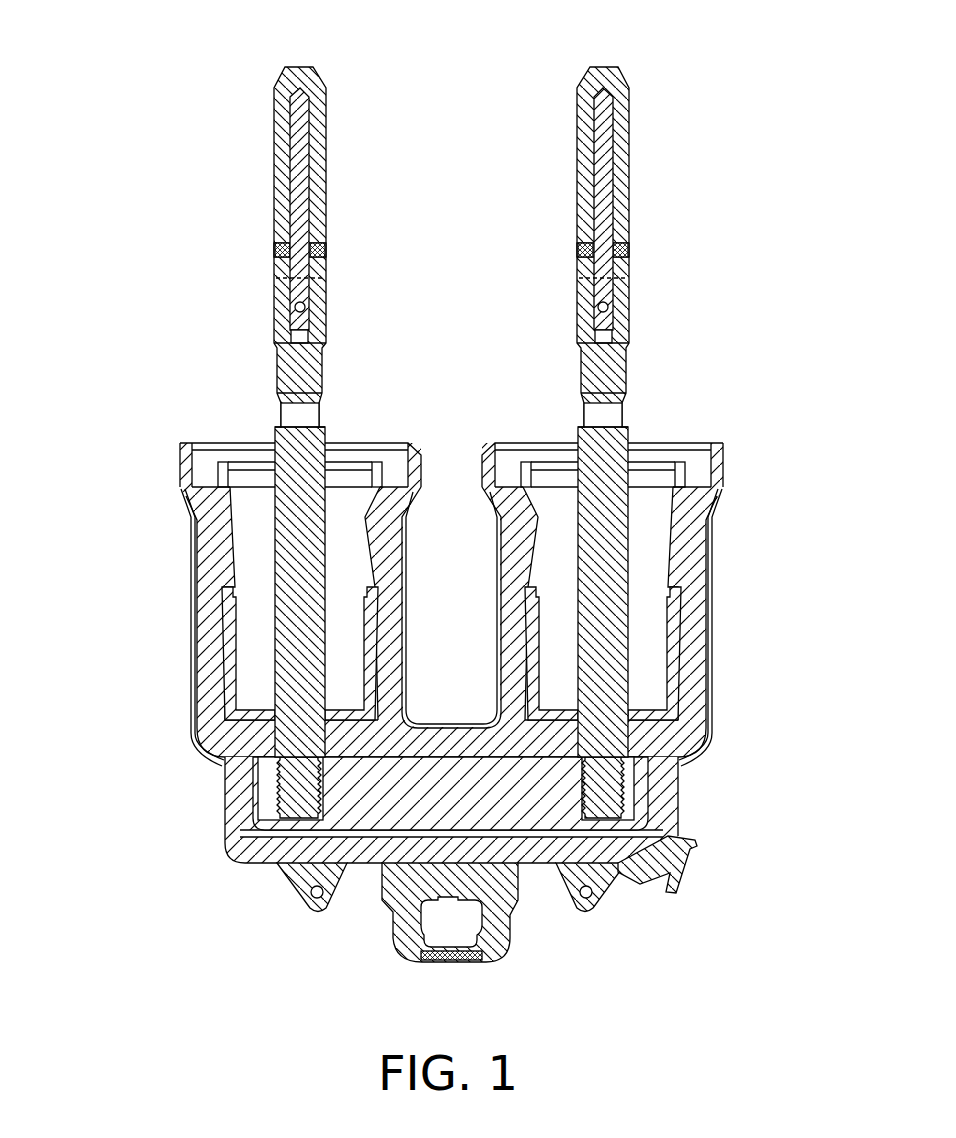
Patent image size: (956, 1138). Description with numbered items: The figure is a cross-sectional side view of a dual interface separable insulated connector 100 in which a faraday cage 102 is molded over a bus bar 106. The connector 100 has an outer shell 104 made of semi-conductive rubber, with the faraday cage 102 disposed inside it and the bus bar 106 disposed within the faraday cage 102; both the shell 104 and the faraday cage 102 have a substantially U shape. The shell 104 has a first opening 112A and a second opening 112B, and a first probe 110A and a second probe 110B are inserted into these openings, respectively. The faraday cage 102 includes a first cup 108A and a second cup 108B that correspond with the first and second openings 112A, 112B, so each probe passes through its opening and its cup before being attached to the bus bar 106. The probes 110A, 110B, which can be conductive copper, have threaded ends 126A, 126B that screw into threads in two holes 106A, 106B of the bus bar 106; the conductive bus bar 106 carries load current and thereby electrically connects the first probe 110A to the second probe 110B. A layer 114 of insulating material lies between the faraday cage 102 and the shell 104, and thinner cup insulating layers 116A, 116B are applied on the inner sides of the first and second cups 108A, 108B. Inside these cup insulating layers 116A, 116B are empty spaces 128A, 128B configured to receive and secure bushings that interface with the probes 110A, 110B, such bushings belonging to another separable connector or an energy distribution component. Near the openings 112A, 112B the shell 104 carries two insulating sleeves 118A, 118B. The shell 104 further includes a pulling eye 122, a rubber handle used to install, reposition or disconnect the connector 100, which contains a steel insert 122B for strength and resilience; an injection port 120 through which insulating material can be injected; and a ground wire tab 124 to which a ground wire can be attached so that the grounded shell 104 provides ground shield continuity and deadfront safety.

The dual interface separable insulated connector 100 is at (163, 114).
The faraday cage 102 is at (235, 762).
The shell 104 is at (247, 866).
The bus bar 106 is at (368, 818).
The hole 106A is at (282, 866).
The hole 106B is at (640, 868).
The first cup 108A is at (228, 696).
The second cup 108B is at (670, 653).
The first probe 110A is at (274, 120).
The second probe 110B is at (629, 160).
The first opening 112A is at (246, 442).
The second opening 112B is at (540, 442).
The layer of insulating material 114 is at (205, 724).
The cup insulating layer 116A is at (225, 634).
The cup insulating layer 116B is at (672, 622).
The insulating sleeve 118A is at (190, 548).
The insulating sleeve 118B is at (711, 548).
The injection port 120 is at (697, 860).
The pulling eye 122 is at (493, 950).
The steel insert 122B is at (428, 963).
The ground wire tab 124 is at (590, 905).
The threaded end 126A is at (298, 778).
The threaded end 126B is at (625, 800).
The empty space 128A is at (342, 496).
The empty space 128B is at (648, 496).